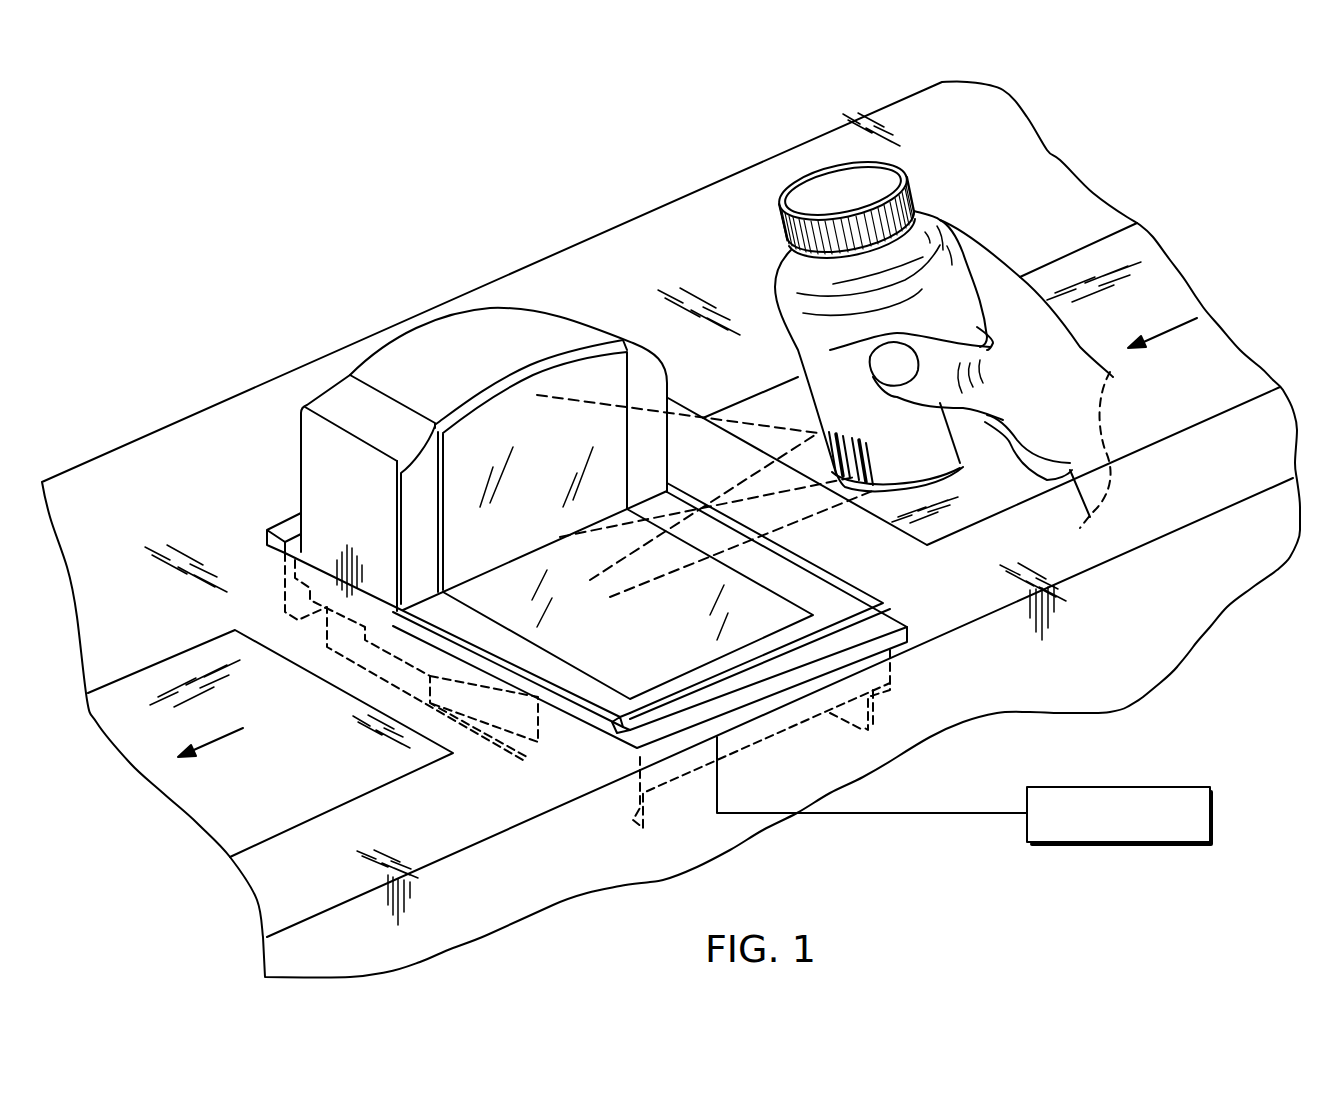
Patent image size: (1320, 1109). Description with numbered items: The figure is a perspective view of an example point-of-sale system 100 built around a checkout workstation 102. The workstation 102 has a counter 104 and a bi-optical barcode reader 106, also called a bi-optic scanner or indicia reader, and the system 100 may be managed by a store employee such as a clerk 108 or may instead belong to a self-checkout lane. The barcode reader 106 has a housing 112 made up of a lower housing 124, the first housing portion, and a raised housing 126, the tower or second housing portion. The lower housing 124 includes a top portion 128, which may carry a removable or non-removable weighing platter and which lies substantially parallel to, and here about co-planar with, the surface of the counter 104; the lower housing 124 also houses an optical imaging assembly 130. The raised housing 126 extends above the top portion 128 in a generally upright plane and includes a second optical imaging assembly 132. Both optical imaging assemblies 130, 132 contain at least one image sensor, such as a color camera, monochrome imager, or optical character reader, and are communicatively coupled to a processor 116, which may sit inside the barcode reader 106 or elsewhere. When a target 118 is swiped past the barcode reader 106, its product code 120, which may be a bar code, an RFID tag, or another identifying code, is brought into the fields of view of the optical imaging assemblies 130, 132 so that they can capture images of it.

The point-of-sale (POS) system 100 is at (205, 198).
The workstation 102 is at (625, 188).
The counter 104 is at (1003, 118).
The bi-optical barcode reader 106 is at (312, 490).
The clerk 108 is at (1077, 405).
The housing 112 is at (360, 448).
The processor 116 is at (1212, 822).
The target 118 is at (912, 321).
The product code 120 is at (873, 453).
The lower housing 124 is at (585, 830).
The raised housing 126 is at (444, 453).
The top portion 128 is at (603, 705).
The optical imaging assembly 130 is at (777, 597).
The optical imaging assembly 132 is at (512, 423).